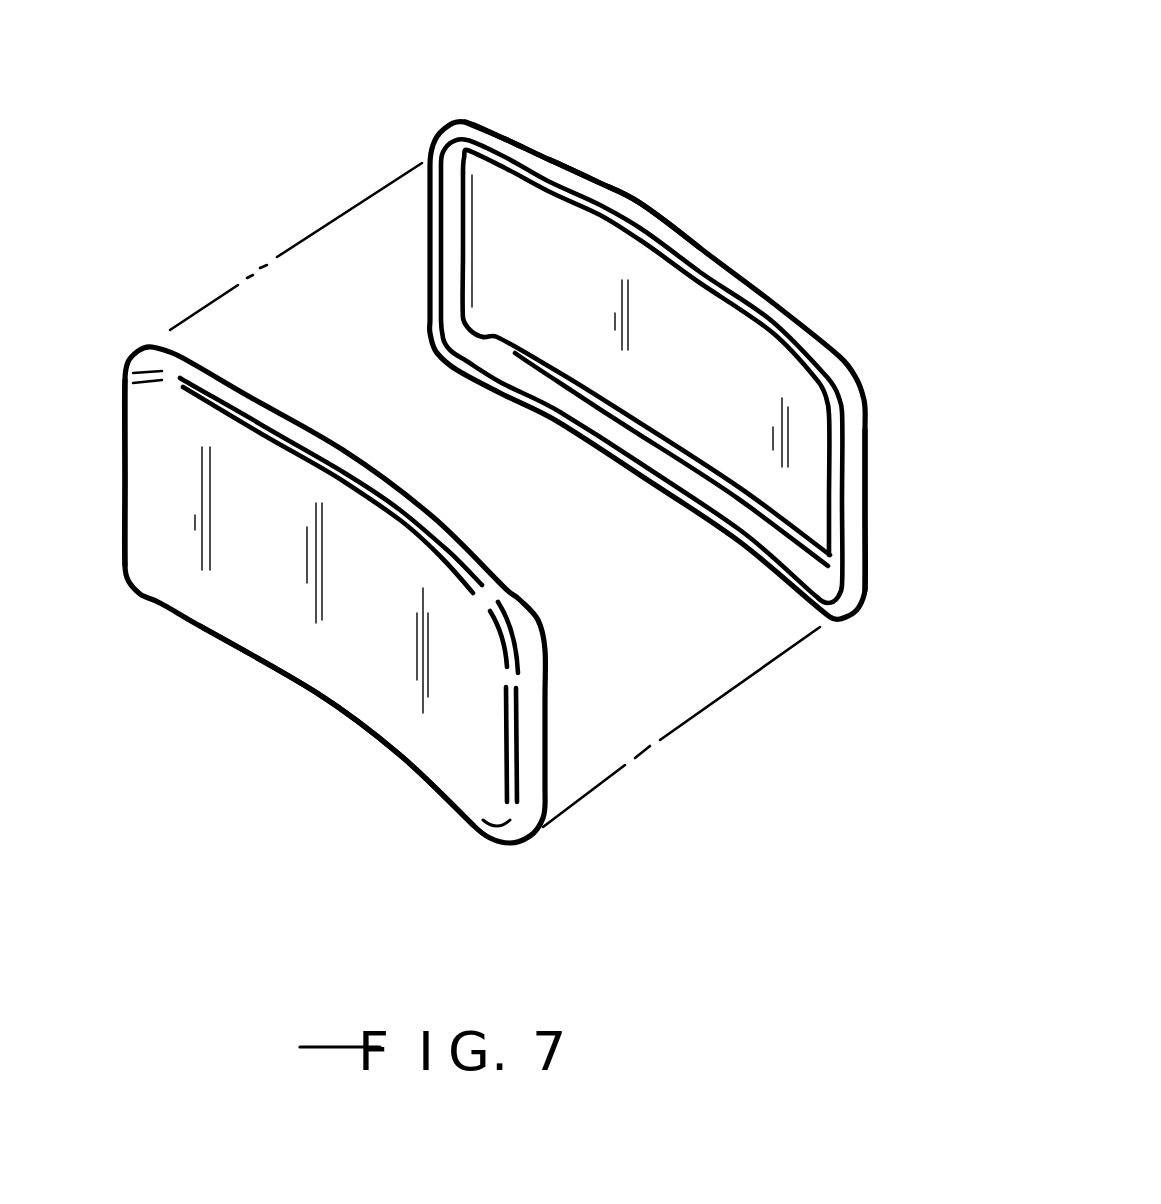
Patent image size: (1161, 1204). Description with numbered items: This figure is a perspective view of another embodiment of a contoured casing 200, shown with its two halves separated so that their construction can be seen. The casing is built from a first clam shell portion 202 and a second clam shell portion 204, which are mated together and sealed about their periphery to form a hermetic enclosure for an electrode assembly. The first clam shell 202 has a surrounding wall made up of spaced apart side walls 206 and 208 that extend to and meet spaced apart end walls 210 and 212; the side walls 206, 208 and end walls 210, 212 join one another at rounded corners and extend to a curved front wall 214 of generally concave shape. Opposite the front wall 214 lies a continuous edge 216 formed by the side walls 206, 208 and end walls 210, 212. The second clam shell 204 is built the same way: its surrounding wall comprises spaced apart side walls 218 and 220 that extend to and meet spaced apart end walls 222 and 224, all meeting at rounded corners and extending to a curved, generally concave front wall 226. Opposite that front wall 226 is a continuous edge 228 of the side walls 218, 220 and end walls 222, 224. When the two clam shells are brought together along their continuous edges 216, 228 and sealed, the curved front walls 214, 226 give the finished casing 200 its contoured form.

The contoured casing 200 is at (742, 106).
The first clam shell portion 202 is at (775, 302).
The second clam shell portion 204 is at (433, 520).
The side wall 206 is at (648, 215).
The side wall 208 is at (613, 427).
The end wall 210 is at (852, 467).
The end wall 212 is at (455, 273).
The front wall 214 is at (670, 305).
The continuous edge 216 is at (575, 172).
The side wall 218 is at (345, 457).
The side wall 220 is at (318, 695).
The end wall 222 is at (532, 730).
The end wall 224 is at (125, 503).
The front wall 226 is at (232, 608).
The continuous edge 228 is at (262, 393).